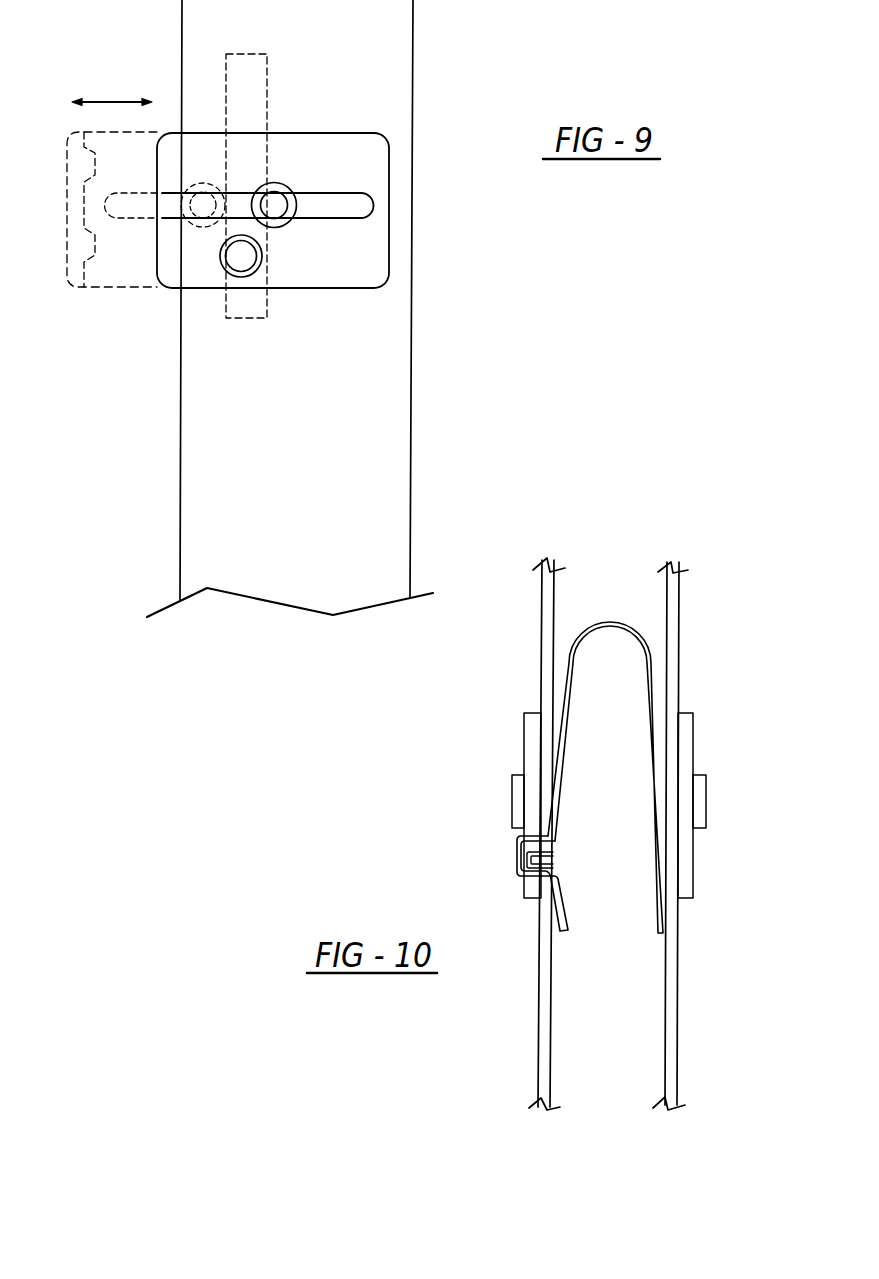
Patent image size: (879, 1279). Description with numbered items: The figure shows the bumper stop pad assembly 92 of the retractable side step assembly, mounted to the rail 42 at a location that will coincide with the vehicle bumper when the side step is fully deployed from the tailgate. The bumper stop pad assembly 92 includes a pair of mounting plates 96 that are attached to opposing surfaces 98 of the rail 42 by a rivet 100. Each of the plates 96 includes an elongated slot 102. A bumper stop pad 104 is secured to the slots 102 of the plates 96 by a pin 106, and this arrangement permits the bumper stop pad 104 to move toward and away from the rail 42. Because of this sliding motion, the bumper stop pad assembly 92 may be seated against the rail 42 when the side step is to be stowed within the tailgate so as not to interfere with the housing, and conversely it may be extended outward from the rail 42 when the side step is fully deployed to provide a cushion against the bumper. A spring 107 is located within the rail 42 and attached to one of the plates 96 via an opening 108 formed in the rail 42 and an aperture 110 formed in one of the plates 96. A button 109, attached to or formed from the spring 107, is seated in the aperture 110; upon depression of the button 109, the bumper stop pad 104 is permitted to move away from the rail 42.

In FIG. 9, the rail 42 is at (410, 387).
In FIG. 10, the rail 42 is at (619, 834).
In FIG. 9, the bumper stop pad assembly 92 is at (274, 223).
In FIG. 9, the mounting plates 96 is at (377, 163).
In FIG. 10, the mounting plates 96 is at (524, 732).
In FIG. 10, the opposing surfaces 98 is at (538, 1002).
In FIG. 10, the rivet 100 is at (512, 792).
In FIG. 9, the elongated slot 102 is at (343, 193).
In FIG. 9, the bumper stop pad 104 is at (103, 288).
In FIG. 9, the pin 106 is at (274, 205).
In FIG. 9, the spring 107 is at (267, 90).
In FIG. 10, the spring 107 is at (602, 623).
In FIG. 10, the opening 108 is at (545, 903).
In FIG. 9, the button 109 is at (241, 256).
In FIG. 10, the button 109 is at (506, 929).
In FIG. 9, the aperture 110 is at (243, 267).
In FIG. 10, the aperture 110 is at (540, 882).